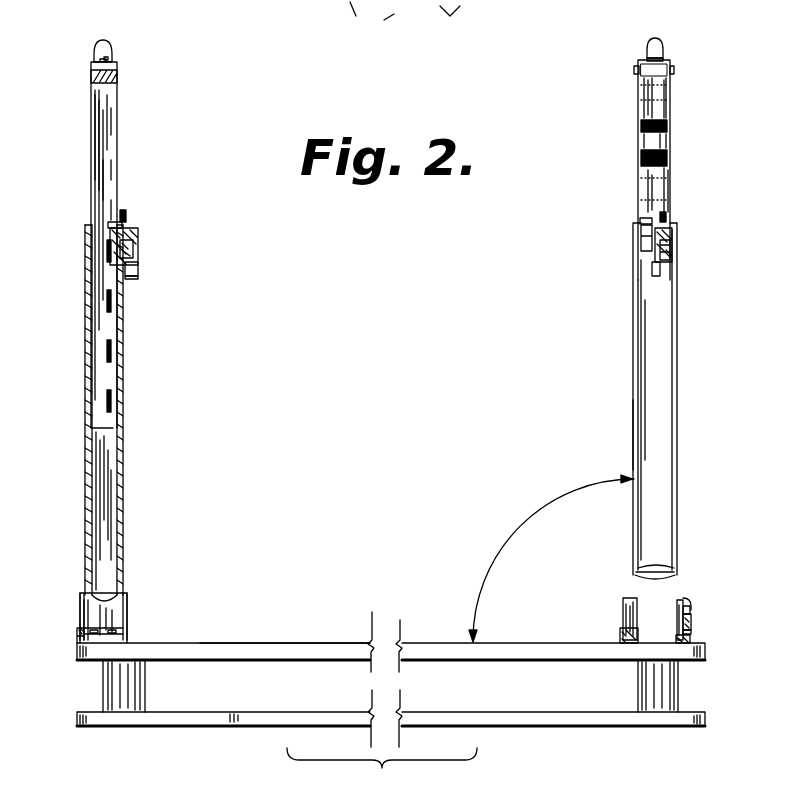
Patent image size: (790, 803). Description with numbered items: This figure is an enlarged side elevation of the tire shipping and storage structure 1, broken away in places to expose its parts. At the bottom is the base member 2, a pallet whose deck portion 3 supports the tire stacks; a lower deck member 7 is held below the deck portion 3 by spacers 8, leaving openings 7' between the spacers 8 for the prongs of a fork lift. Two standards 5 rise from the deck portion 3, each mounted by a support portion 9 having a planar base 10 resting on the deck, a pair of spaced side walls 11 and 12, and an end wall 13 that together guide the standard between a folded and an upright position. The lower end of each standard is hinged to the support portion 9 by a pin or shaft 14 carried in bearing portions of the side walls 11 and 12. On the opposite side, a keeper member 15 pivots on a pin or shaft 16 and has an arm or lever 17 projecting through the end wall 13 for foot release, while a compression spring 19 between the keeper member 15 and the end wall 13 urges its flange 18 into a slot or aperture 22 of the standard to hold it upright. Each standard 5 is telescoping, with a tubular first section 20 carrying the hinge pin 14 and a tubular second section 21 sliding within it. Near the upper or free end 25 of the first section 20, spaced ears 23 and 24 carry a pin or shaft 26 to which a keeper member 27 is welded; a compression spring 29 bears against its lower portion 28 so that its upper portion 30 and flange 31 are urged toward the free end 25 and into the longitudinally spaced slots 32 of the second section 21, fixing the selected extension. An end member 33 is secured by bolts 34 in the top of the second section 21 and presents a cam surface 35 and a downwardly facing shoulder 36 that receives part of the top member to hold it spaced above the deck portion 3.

The tire shipping and storage structure 1 is at (698, 46).
The base member 2 is at (291, 643).
The deck portion 3 is at (330, 650).
The standards 5 is at (85, 318).
The lower deck member 7 is at (391, 701).
The openings 7' is at (484, 644).
The spacers 8 is at (678, 686).
The support portion 9 is at (80, 612).
The planar base 10 is at (147, 643).
The side wall 11 is at (84, 600).
The side wall 12 is at (123, 600).
The end wall 13 is at (688, 624).
The pin or shaft 14 is at (78, 644).
The keeper member 15 is at (686, 608).
The pin or shaft 16 is at (690, 640).
The arm or lever 17 is at (692, 632).
The keeper portion or flange 18 is at (680, 608).
The compression spring 19 is at (691, 618).
The tubular first section 20 is at (654, 372).
The tubular second section 21 is at (672, 173).
The slot or aperture 22 is at (666, 572).
The ear 23 is at (644, 236).
The ear 24 is at (136, 235).
The upper or free end 25 is at (87, 225).
The pin or shaft 26 is at (130, 252).
The keeper member 27 is at (126, 215).
The lower portion 28 is at (138, 270).
The compression spring 29 is at (128, 278).
The upper portion 30 is at (122, 212).
The flange 31 is at (108, 224).
The slots 32 is at (100, 216).
The end member 33 is at (110, 38).
The bolts 34 is at (674, 72).
The cam surface 35 is at (647, 51).
The downwardly facing shoulder 36 is at (108, 60).